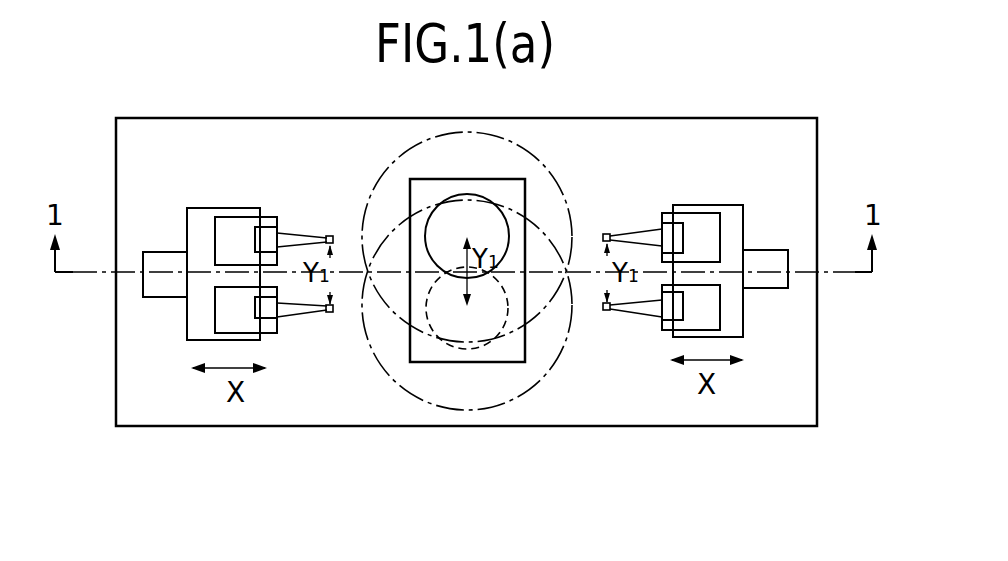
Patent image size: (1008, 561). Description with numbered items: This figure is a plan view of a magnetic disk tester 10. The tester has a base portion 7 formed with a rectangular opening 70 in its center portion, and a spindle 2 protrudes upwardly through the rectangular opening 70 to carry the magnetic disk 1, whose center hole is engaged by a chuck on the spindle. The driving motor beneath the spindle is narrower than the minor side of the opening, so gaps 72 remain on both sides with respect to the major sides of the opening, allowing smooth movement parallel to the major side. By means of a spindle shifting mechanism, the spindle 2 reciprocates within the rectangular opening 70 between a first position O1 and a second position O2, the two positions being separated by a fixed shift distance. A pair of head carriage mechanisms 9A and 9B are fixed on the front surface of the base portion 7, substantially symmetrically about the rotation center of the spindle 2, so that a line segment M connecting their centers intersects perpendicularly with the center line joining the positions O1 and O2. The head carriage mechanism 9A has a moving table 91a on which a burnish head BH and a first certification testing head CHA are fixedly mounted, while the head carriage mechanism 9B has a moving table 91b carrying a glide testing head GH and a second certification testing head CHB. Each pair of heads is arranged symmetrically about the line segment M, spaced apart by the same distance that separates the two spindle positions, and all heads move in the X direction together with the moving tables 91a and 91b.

The magnetic disk tester 10 is at (104, 154).
The magnetic disk 1 is at (400, 160).
The spindle 2 is at (493, 225).
The base portion 7 is at (615, 412).
The rectangular opening 70 is at (524, 350).
The gaps 72 is at (424, 282).
The head carriage mechanism 9A is at (773, 258).
The head carriage mechanism 9B is at (163, 252).
The moving table 91a is at (728, 215).
The moving table 91b is at (203, 220).
The glide testing head GH is at (330, 235).
The burnish head BH is at (607, 234).
The first certification testing head CHA is at (607, 312).
The second certification testing head CHB is at (330, 313).
The first position O1 is at (467, 236).
The second position O2 is at (462, 286).
The line segment M is at (820, 280).